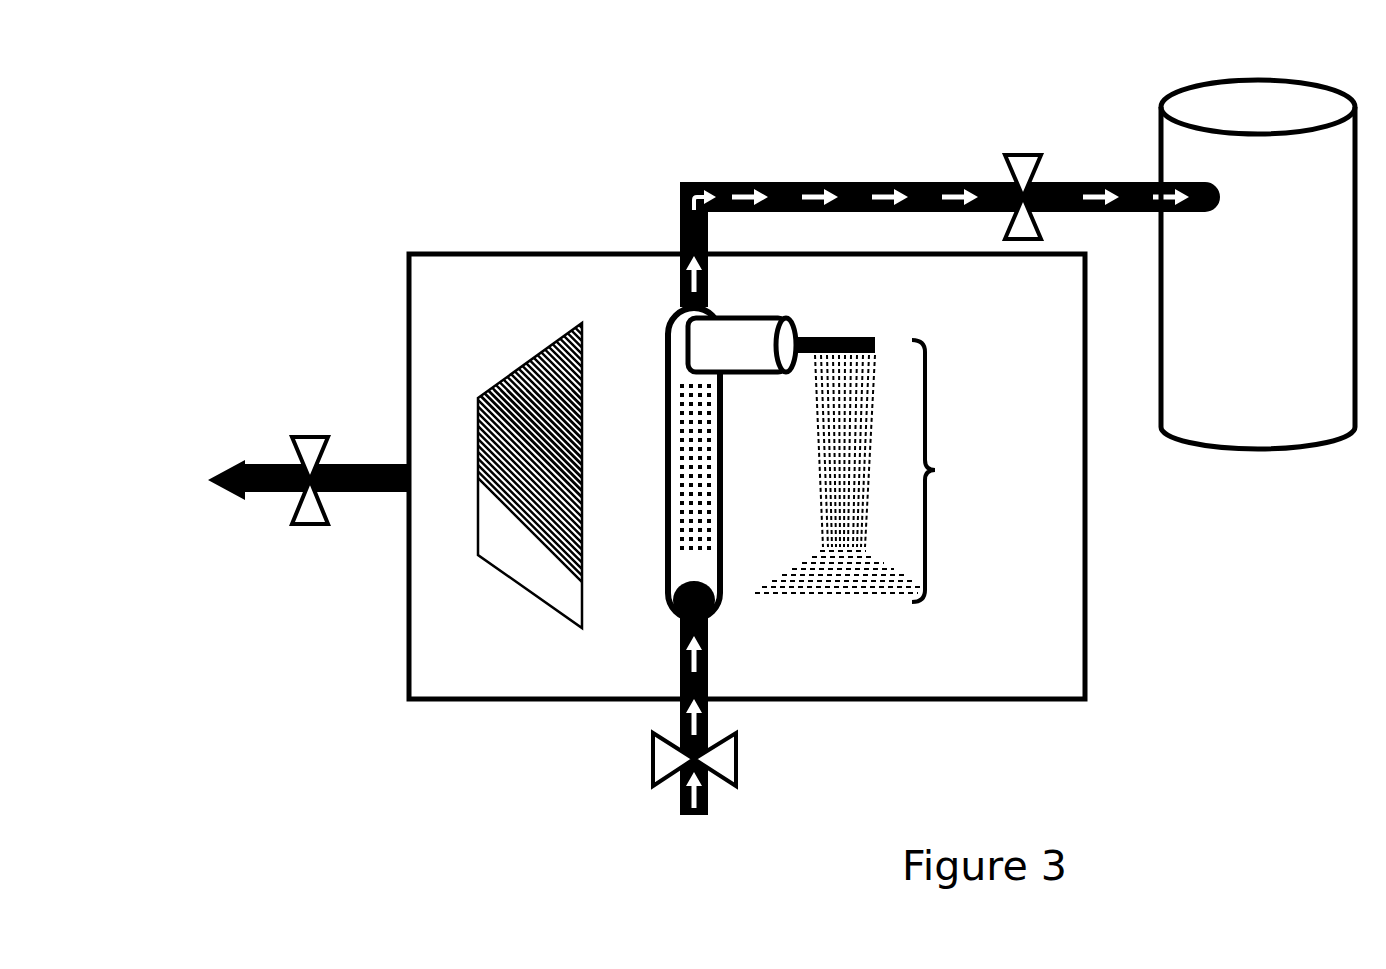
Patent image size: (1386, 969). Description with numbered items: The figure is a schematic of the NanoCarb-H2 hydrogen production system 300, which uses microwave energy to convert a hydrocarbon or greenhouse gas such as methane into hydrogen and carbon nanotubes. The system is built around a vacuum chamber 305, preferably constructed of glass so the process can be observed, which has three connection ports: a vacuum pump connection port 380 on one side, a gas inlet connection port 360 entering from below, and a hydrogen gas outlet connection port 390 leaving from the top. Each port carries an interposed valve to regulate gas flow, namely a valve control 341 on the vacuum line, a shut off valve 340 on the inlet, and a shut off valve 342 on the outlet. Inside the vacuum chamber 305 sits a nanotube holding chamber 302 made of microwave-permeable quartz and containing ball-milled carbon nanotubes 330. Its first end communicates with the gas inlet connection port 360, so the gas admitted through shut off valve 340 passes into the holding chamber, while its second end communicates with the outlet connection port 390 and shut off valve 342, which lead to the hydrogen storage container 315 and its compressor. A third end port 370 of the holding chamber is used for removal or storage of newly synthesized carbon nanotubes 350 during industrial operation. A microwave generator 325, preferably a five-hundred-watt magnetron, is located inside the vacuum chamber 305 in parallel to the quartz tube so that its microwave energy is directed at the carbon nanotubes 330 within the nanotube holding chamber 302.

The hydrogen production system 300 is at (615, 145).
The nanotube holding chamber 302 is at (710, 568).
The vacuum chamber 305 is at (1100, 652).
The hydrogen storage container 315 is at (1273, 403).
The microwave generator 325 is at (510, 572).
The carbon nanotubes 330 is at (684, 402).
The shut off valve 340 is at (655, 778).
The valve control 341 is at (310, 506).
The shut off valve 342 is at (1022, 158).
The newly synthesized carbon nanotubes 350 is at (937, 472).
The gas inlet connection port 360 is at (690, 815).
The third end port 370 is at (760, 332).
The vacuum pump connection port 380 is at (277, 486).
The hydrogen gas outlet connection port 390 is at (785, 182).